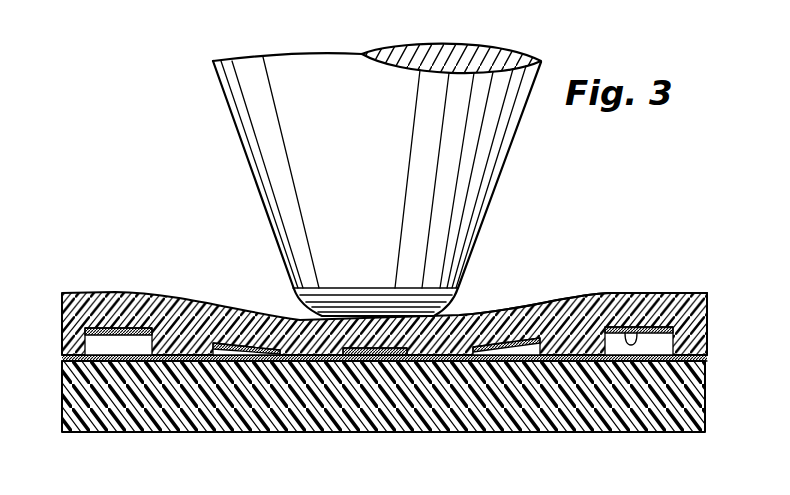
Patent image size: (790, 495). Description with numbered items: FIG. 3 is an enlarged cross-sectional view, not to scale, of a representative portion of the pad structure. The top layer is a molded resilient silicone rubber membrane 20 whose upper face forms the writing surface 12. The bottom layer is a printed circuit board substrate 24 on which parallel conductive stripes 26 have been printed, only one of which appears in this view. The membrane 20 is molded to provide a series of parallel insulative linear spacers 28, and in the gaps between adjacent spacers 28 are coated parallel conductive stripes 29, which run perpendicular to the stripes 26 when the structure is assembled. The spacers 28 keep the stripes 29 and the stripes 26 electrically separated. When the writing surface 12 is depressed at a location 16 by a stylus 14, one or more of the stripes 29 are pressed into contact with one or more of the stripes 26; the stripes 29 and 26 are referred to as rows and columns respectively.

The writing surface 12 is at (687, 293).
The stylus 14 is at (480, 196).
The location 16 is at (467, 312).
The membrane 20 is at (62, 318).
The printed circuit board substrate 24 is at (62, 383).
The conductive stripes 26 is at (705, 358).
The insulative linear spacers 28 is at (193, 362).
The conductive stripes 29 is at (96, 339).